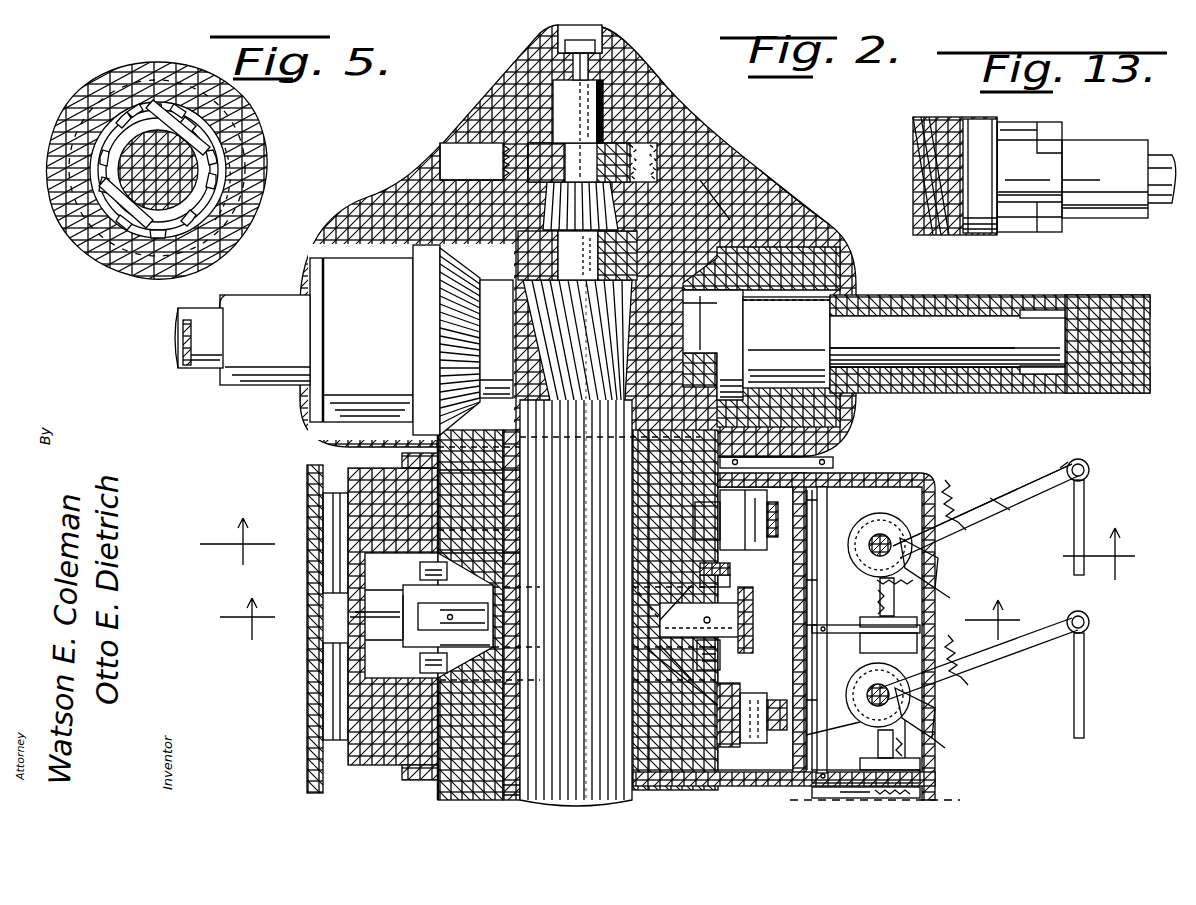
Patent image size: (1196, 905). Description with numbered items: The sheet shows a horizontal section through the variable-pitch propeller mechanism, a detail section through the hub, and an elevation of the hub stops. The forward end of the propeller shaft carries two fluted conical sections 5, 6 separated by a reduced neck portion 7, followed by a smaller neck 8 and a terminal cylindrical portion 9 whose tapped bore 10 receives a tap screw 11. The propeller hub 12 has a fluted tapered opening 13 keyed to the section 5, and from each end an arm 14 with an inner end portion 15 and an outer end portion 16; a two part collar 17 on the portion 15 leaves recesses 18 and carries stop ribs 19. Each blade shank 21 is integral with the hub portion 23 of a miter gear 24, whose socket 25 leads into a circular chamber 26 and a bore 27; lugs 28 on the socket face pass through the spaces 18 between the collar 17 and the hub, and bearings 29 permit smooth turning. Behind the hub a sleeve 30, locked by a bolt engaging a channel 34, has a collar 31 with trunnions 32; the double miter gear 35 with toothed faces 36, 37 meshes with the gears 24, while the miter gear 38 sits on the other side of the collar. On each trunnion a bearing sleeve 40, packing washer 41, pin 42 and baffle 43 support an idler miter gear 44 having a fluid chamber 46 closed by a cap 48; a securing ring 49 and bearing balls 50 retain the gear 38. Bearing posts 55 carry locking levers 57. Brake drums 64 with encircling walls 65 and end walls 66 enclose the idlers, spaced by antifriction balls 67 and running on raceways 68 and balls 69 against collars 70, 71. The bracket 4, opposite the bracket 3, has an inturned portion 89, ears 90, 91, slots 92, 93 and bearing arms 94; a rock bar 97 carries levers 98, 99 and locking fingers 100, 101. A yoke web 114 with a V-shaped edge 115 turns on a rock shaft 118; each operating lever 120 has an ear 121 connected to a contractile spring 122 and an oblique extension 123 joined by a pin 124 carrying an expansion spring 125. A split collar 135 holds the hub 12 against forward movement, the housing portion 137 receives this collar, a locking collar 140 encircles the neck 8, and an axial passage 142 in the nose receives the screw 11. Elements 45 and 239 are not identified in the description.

In FIG. 2, the bracket 3 is at (667, 562).
In FIG. 2, the bracket 4 is at (615, 619).
In FIG. 2, the conical section 5 is at (695, 245).
In FIG. 2, the conical section 6 is at (460, 255).
In FIG. 2, the reduced neck portion 7 is at (703, 521).
In FIG. 2, the neck 8 is at (977, 792).
In FIG. 2, the terminal cylindrical portion 9 is at (606, 107).
In FIG. 2, the tapped bore 10 is at (650, 78).
In FIG. 2, the tap screw 11 is at (603, 48).
In FIG. 13, the propeller hub 12 is at (985, 240).
In FIG. 2, the propeller hub 12 is at (463, 340).
In FIG. 13, the fluted tapered opening 13 is at (930, 236).
In FIG. 5, the arm 14 is at (158, 170).
In FIG. 2, the arm 14 is at (168, 326).
In FIG. 5, the inner end portion 15 is at (200, 170).
In FIG. 13, the inner end portion 15 is at (1125, 140).
In FIG. 2, the inner end portion 15 is at (830, 296).
In FIG. 2, the outer end portion 16 is at (203, 355).
In FIG. 13, the two part collar 17 is at (1055, 130).
In FIG. 2, the two part collar 17 is at (735, 352).
In FIG. 13, the axially extending recesses 18 is at (1055, 185).
In FIG. 5, the stop rib 19 is at (157, 115).
In FIG. 13, the stop rib 19 is at (1013, 130).
In FIG. 2, the stop rib 19 is at (718, 333).
In FIG. 2, the shank 21 is at (257, 385).
In FIG. 2, the hub portion 23 is at (860, 248).
In FIG. 5, the miter gear 24 is at (270, 129).
In FIG. 2, the miter gear 24 is at (427, 258).
In FIG. 2, the socket 25 is at (835, 232).
In FIG. 2, the circular chamber 26 is at (860, 368).
In FIG. 2, the bore 27 is at (1000, 374).
In FIG. 5, the lugs 28 is at (205, 144).
In FIG. 2, the bearings 29 is at (858, 284).
In FIG. 2, the sleeve 30 is at (600, 447).
In FIG. 2, the external encircling collar 31 is at (585, 625).
In FIG. 2, the trunnions 32 is at (425, 620).
In FIG. 2, the transverse recess 34 is at (633, 647).
In FIG. 2, the double miter gear 35 is at (707, 521).
In FIG. 2, the toothed face 36 is at (505, 470).
In FIG. 2, the toothed face 37 is at (475, 533).
In FIG. 2, the miter gear 38 is at (585, 727).
In FIG. 2, the bearing sleeve 40 is at (482, 587).
In FIG. 2, the packing washer 41 is at (500, 602).
In FIG. 2, the pin 42 is at (430, 650).
In FIG. 2, the baffle member 43 is at (428, 582).
In FIG. 2, the idler miter gear 44 is at (490, 658).
In FIG. 2, the line 45 is at (470, 562).
In FIG. 2, the fluid chamber 46 is at (737, 663).
In FIG. 2, the cap 48 is at (725, 590).
In FIG. 2, the securing ring 49 is at (515, 793).
In FIG. 2, the bearing balls 50 is at (731, 747).
In FIG. 2, the bearing posts 55 is at (749, 520).
In FIG. 2, the locking lever 57 is at (720, 620).
In FIG. 2, the brake drums 64 is at (345, 470).
In FIG. 2, the encircling wall 65 is at (350, 652).
In FIG. 2, the end wall 66 is at (838, 426).
In FIG. 2, the antifriction balls 67 is at (350, 617).
In FIG. 2, the bearing ball raceways 68 is at (395, 760).
In FIG. 2, the bearing balls 69 is at (470, 500).
In FIG. 2, the retaining and bearing collar 70 is at (402, 458).
In FIG. 2, the bearing and drum retaining collar 71 is at (432, 780).
In FIG. 2, the inwardly turned terminal portion 89 is at (917, 462).
In FIG. 2, the ear 90 is at (928, 674).
In FIG. 2, the ear 91 is at (925, 626).
In FIG. 2, the longitudinal slot 92 is at (925, 545).
In FIG. 2, the slot 93 is at (940, 692).
In FIG. 2, the bearing arms 94 is at (945, 480).
In FIG. 2, the rock bar 97 is at (830, 512).
In FIG. 2, the lever 98 is at (880, 497).
In FIG. 2, the lever 99 is at (870, 712).
In FIG. 2, the locking finger 100 is at (840, 640).
In FIG. 2, the locking finger 101 is at (840, 777).
In FIG. 2, the web portion 114 is at (925, 594).
In FIG. 2, the V-shaped edge 115 is at (926, 744).
In FIG. 2, the rock shaft 118 is at (868, 568).
In FIG. 2, the operating lever 120 is at (1090, 468).
In FIG. 2, the laterally projecting ear 121 is at (1005, 477).
In FIG. 2, the contractile spring 122 is at (1085, 447).
In FIG. 2, the oblique extension 123 is at (945, 702).
In FIG. 2, the pin 124 is at (950, 565).
In FIG. 2, the expansion spring 125 is at (945, 727).
In FIG. 2, the split collar 135 is at (445, 245).
In FIG. 5, the housing portion 137 is at (258, 187).
In FIG. 2, the housing portion 137 is at (722, 185).
In FIG. 2, the locking collar 140 is at (632, 160).
In FIG. 2, the axial passage 142 is at (575, 62).
In FIG. 2, the line 239 is at (640, 690).